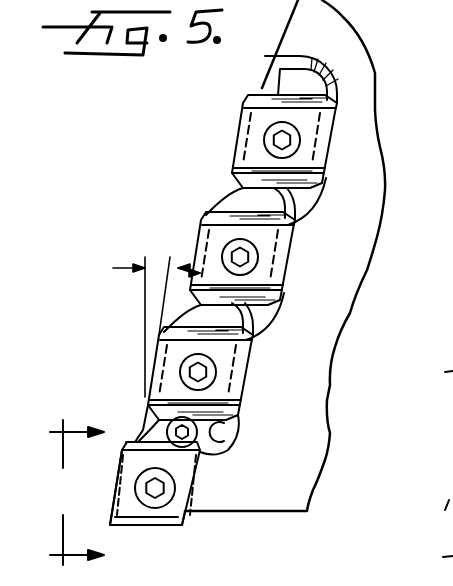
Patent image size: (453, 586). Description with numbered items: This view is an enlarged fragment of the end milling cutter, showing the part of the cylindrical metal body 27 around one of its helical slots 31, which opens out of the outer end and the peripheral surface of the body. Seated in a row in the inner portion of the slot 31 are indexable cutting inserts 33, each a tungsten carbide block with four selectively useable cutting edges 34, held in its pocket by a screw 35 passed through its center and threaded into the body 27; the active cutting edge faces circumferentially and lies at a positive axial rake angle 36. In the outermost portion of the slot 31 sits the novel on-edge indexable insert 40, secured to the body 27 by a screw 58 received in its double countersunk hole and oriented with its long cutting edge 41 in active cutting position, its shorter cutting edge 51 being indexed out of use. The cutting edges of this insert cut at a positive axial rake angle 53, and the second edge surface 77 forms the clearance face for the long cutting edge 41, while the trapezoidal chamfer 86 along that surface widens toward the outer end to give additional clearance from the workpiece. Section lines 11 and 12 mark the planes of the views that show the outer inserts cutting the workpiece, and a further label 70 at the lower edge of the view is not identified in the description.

The section line 11- 11 is at (60, 496).
The workpiece 12 is at (431, 466).
The cylindrical metal body 27 is at (336, 288).
The slot 31 is at (226, 436).
The indexable cutting insert 33 is at (238, 120).
The cutting edge 34 is at (278, 92).
The screw 35 is at (292, 145).
The positive axial rake angle 36 is at (158, 268).
The insert 40 is at (128, 528).
The long cutting edge 41 is at (106, 468).
The short cutting edge 51 is at (162, 432).
The positive axial rake angle 53 is at (115, 465).
The screw 58 is at (186, 474).
The workpiece portion 70 is at (313, 579).
The second edge surface 77 is at (190, 518).
The trapezoidal chamfer 86 is at (161, 528).